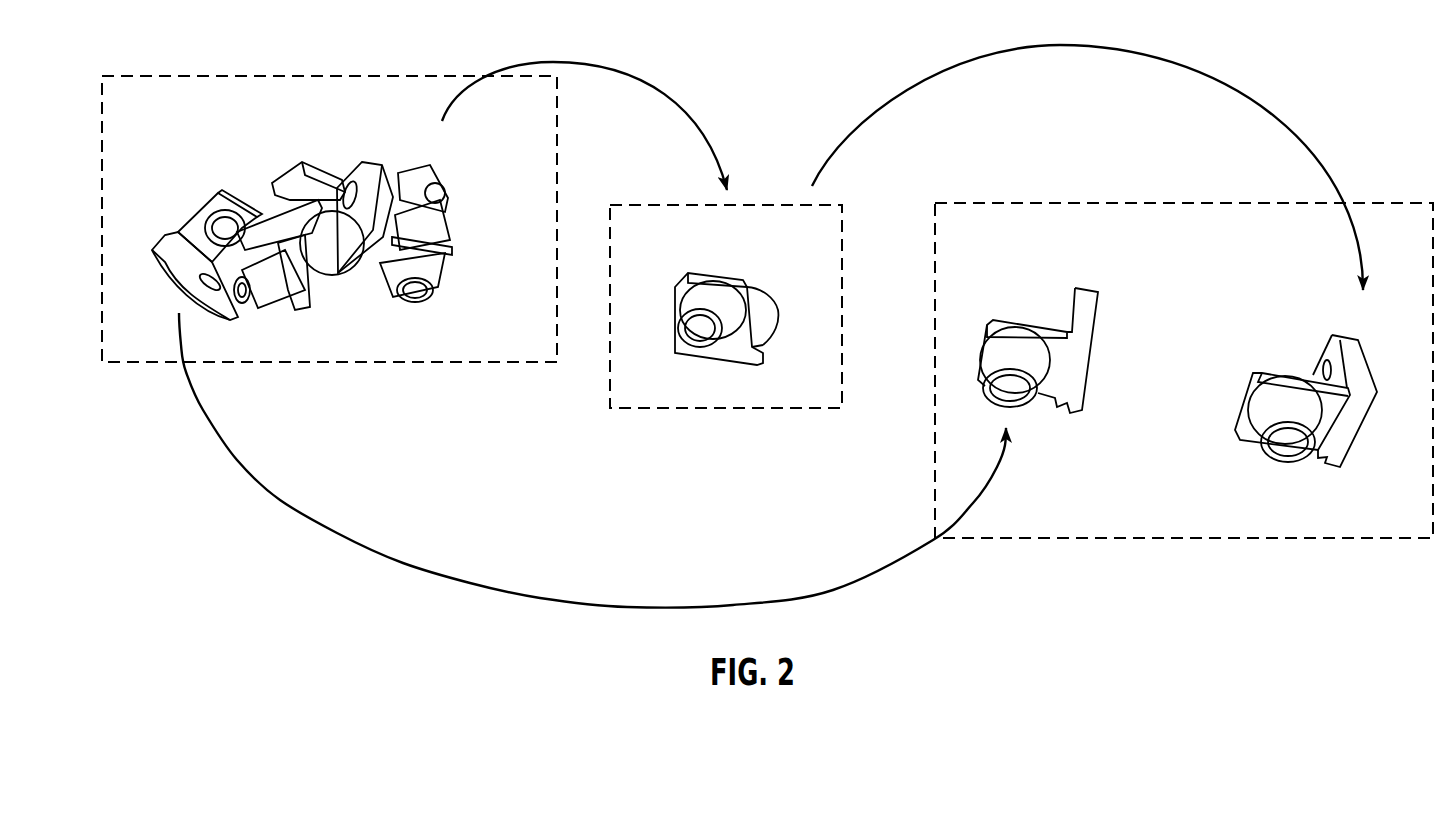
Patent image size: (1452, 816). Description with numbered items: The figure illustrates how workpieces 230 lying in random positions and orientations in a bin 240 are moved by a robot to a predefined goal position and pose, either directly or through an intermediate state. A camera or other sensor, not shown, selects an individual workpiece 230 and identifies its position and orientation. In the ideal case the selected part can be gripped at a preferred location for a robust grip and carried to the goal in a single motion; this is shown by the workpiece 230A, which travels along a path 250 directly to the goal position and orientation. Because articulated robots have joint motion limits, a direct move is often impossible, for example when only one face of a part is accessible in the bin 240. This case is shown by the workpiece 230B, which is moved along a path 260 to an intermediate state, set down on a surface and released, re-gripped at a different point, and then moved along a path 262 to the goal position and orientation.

The workpiece 230 is at (757, 294).
The workpiece 230A is at (190, 217).
The workpiece 230B is at (428, 172).
The bin 240 is at (402, 77).
The path 250 is at (432, 572).
The path 260 is at (657, 88).
The path 262 is at (1153, 62).